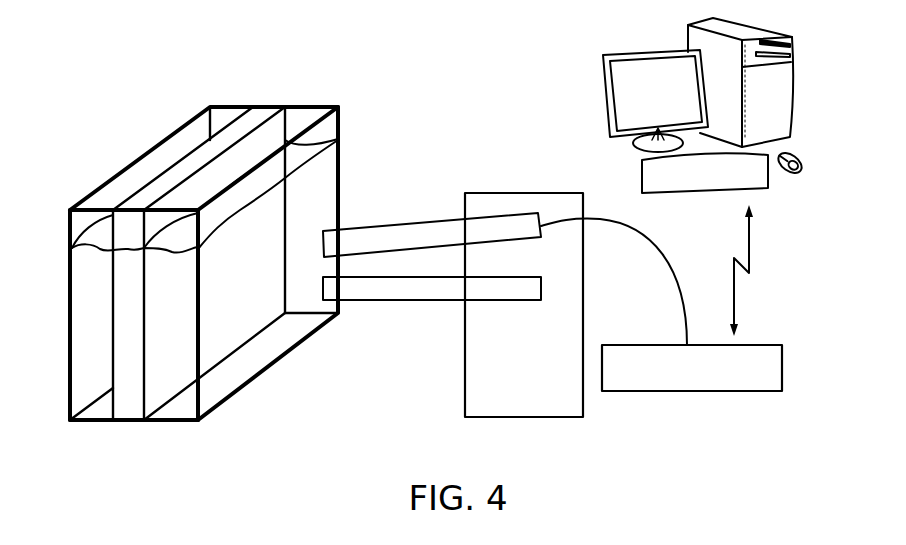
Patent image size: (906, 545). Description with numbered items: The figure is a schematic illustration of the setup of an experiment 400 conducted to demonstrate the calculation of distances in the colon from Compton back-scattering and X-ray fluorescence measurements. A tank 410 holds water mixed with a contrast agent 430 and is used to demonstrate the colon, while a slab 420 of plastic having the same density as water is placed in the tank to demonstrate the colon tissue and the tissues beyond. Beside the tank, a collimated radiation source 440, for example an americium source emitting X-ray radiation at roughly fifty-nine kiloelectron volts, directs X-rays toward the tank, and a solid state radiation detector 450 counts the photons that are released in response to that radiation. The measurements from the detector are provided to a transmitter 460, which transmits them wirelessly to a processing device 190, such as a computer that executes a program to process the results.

The experiment 400 is at (138, 45).
The tank 410 is at (313, 107).
The slab 420 is at (262, 113).
The contrast agent 430 is at (178, 420).
The collimated radiation source 440 is at (406, 301).
The radiation detector 450 is at (408, 226).
The transmitter 460 is at (698, 391).
The processing device 190 is at (688, 42).